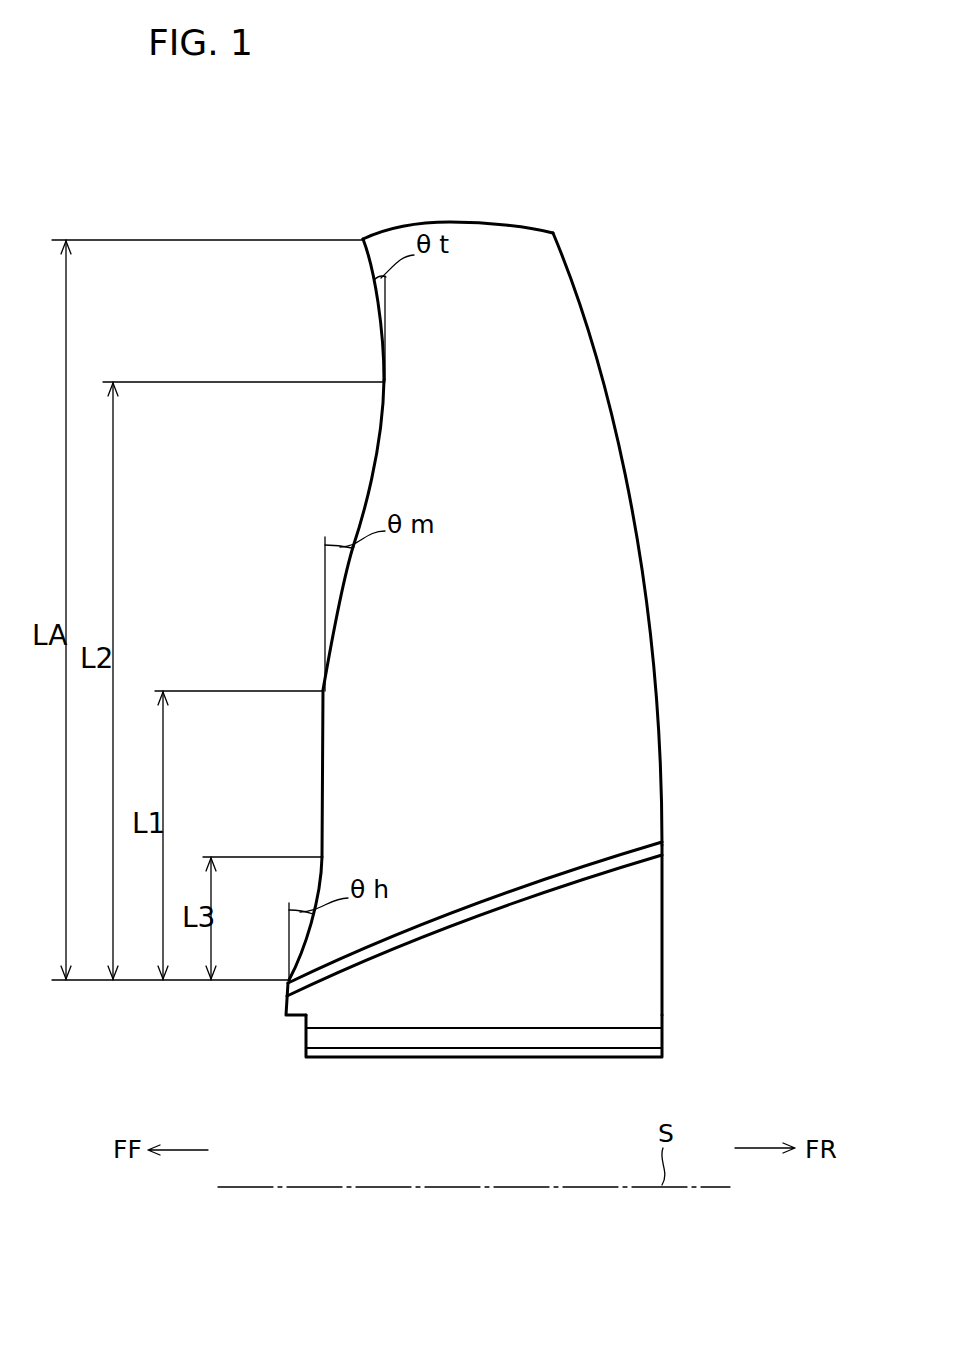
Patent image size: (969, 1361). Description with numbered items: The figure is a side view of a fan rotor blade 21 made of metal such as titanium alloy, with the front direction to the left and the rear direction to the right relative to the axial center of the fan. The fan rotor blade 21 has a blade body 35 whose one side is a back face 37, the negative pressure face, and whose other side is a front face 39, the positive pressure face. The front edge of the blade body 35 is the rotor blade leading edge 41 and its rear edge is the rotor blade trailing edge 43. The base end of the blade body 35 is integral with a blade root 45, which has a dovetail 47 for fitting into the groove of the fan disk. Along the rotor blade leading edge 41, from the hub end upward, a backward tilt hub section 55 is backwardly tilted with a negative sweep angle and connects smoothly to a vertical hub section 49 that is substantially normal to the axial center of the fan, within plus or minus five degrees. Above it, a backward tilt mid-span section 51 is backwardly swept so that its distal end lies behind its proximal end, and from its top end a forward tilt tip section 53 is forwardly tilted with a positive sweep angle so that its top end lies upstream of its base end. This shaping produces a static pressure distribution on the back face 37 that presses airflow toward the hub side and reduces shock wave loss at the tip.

The fan rotor blade 21 is at (466, 164).
The blade body 35 is at (609, 368).
The back face 37 is at (580, 493).
The front face 39 is at (583, 556).
The rotor blade leading edge 41 is at (378, 434).
The rotor blade trailing edge 43 is at (651, 633).
The blade root 45 is at (667, 964).
The dovetail 47 is at (472, 1040).
The vertical hub section 49 is at (322, 768).
The backward tilt mid-span section 51 is at (372, 478).
The forward tilt tip section 53 is at (371, 273).
The backward tilt hub section 55 is at (322, 884).